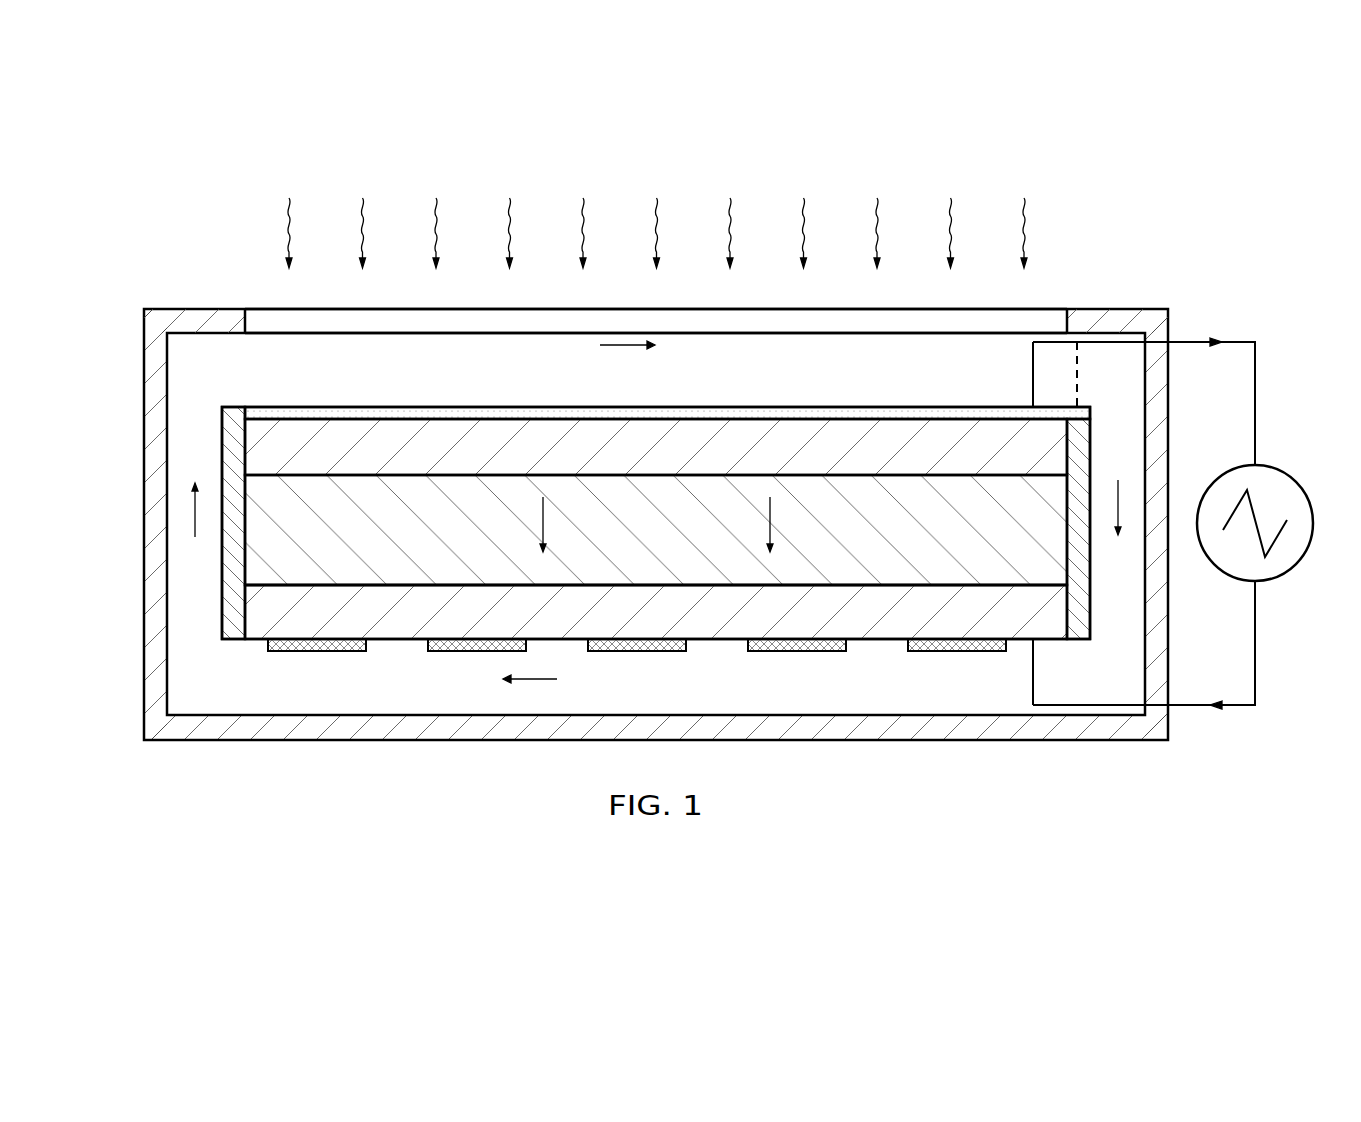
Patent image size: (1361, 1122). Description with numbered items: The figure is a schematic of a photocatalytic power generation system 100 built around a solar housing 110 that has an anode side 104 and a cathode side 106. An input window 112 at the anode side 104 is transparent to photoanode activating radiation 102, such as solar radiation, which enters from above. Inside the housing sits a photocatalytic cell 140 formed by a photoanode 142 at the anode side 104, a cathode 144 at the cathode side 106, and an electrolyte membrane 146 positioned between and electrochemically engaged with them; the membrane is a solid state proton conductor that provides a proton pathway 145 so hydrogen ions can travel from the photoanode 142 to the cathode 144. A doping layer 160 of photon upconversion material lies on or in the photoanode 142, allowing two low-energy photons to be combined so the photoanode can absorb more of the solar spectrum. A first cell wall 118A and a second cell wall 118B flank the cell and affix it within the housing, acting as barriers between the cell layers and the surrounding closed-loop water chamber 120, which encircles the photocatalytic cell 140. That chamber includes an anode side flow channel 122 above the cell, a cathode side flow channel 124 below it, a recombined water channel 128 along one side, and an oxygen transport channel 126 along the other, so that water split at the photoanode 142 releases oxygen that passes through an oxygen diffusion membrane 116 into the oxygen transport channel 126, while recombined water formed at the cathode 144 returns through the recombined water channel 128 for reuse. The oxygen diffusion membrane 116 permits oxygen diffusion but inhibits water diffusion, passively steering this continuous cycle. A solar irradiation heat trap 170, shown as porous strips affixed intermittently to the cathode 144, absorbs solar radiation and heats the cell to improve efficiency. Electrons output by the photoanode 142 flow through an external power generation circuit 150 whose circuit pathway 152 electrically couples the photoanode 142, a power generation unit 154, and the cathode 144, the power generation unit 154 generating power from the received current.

The photocatalytic power generation system 100 is at (1230, 205).
The photoanode activating radiation 102 is at (286, 208).
The anode side 104 is at (401, 290).
The cathode side 106 is at (875, 750).
The solar housing 110 is at (1125, 285).
The input window 112 is at (1047, 317).
The oxygen diffusion membrane 116 is at (1078, 357).
The first cell wall 118A is at (237, 594).
The second cell wall 118B is at (1083, 418).
The closed-loop water chamber 120 is at (200, 350).
The anode side flow channel 122 is at (605, 345).
The cathode side flow channel 124 is at (537, 680).
The oxygen transport channel 126 is at (1118, 497).
The recombined water channel 128 is at (195, 518).
The photocatalytic cell 140 is at (900, 400).
The photoanode 142 is at (255, 442).
The cathode 144 is at (256, 620).
The proton pathway 145 is at (770, 518).
The electrolyte membrane 146 is at (256, 567).
The external power generation circuit 150 is at (1294, 608).
The circuit pathway 152 is at (1255, 342).
The power generation unit 154 is at (1284, 473).
The doping layer 160 is at (282, 415).
The solar irradiation heat trap 170 is at (317, 652).